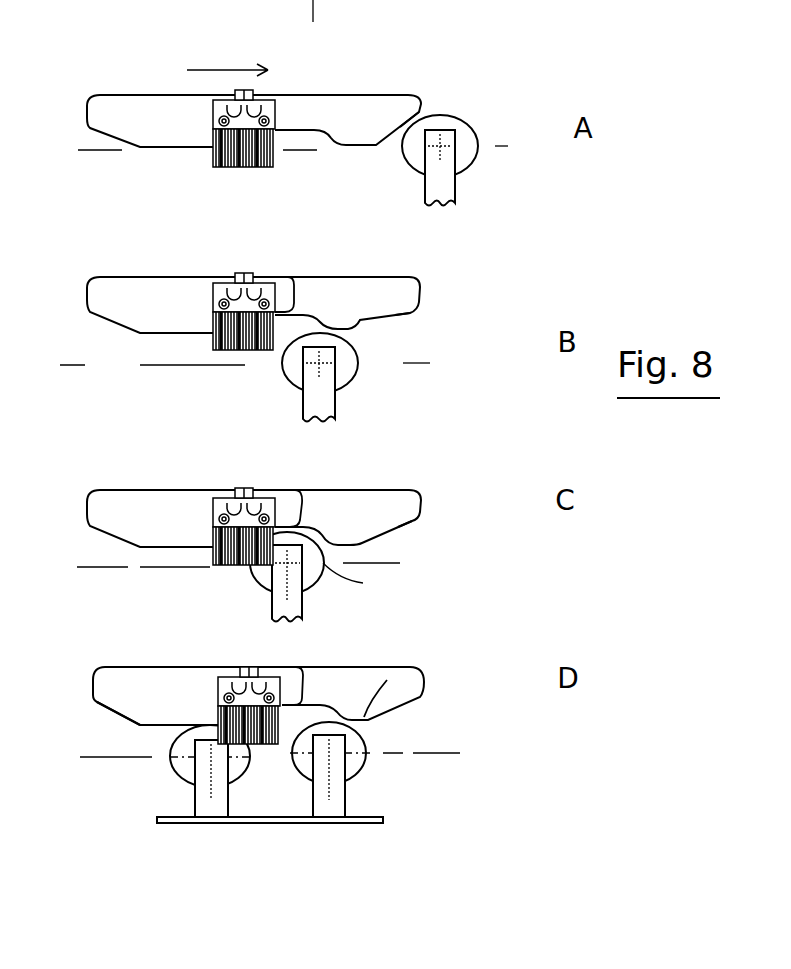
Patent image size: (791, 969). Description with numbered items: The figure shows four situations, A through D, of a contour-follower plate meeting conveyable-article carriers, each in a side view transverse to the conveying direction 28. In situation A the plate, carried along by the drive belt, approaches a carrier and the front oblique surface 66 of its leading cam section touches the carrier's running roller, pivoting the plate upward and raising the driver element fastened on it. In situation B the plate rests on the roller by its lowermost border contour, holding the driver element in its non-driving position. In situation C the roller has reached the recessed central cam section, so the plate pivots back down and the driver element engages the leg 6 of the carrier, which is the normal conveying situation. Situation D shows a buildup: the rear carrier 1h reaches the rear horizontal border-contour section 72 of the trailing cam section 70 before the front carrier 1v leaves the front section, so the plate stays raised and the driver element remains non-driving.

The rear conveyable-article carrier 1h is at (198, 795).
The front conveyable-article carrier 1v is at (350, 802).
The leg 6 is at (356, 579).
The conveying direction 28 is at (193, 63).
The front oblique surface 66 is at (420, 110).
The trailing cam section 70 is at (156, 709).
The rear horizontal border-contour section 72 is at (167, 722).